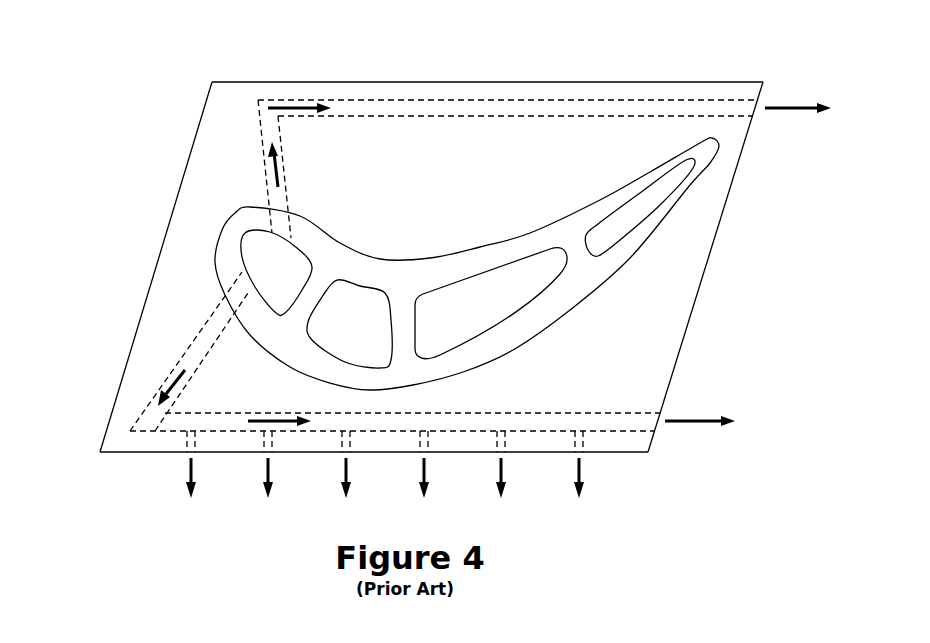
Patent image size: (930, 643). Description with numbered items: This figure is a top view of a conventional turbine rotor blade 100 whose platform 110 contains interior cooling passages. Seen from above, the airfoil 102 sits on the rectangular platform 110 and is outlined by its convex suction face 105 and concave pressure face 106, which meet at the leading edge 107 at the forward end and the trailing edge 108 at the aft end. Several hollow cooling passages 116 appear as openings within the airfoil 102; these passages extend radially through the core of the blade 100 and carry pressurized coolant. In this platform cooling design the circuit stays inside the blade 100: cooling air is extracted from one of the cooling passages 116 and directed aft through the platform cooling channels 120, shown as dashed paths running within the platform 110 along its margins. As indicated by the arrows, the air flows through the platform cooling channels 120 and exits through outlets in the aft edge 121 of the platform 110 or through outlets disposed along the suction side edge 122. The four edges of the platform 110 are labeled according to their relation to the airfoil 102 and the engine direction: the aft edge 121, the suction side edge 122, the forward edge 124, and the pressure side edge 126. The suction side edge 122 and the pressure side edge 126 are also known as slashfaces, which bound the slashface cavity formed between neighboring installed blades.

The turbine rotor blade 100 is at (122, 82).
The airfoil 102 is at (452, 268).
The suction face 105 is at (462, 372).
The pressure face 106 is at (471, 249).
The leading edge 107 is at (224, 220).
The trailing edge 108 is at (713, 138).
The platform 110 is at (152, 319).
The cooling passages 116 is at (259, 280).
The platform cooling channels 120 is at (380, 100).
The aft edge 121 is at (697, 298).
The suction side edge 122 is at (137, 452).
The forward edge 124 is at (148, 290).
The pressure side edge 126 is at (673, 82).